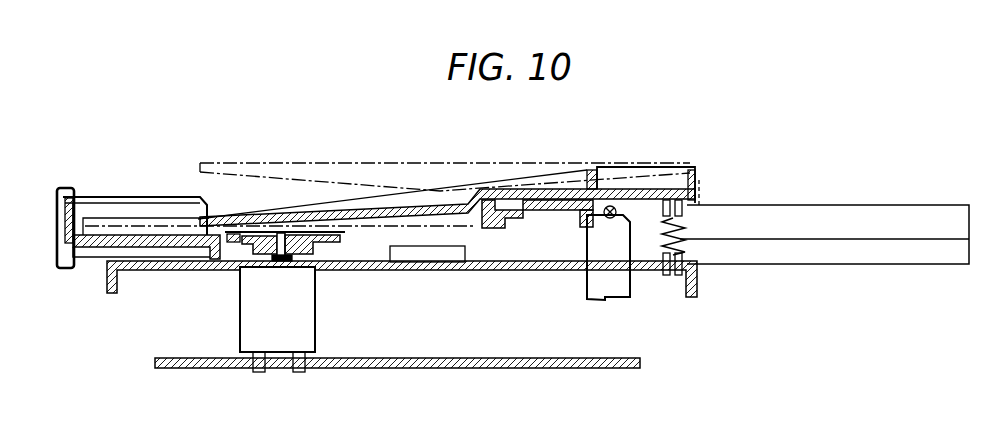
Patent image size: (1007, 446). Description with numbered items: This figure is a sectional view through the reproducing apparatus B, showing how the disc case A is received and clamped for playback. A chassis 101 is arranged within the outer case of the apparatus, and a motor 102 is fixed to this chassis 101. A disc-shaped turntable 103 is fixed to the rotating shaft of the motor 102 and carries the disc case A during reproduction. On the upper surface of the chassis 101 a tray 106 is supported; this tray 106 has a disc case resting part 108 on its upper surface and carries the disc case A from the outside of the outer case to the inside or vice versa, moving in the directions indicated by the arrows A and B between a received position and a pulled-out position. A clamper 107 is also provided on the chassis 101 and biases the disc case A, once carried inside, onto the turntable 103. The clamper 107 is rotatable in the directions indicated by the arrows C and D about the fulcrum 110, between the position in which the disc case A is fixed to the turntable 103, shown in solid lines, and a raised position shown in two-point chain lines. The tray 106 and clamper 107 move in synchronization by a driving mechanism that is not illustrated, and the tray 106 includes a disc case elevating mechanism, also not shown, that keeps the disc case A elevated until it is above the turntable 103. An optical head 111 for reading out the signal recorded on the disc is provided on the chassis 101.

The chassis 101 is at (148, 271).
The motor 102 is at (240, 331).
The turntable 103 is at (318, 243).
The tray 106 is at (100, 192).
The clamper 107 is at (533, 186).
The disc case resting part 108 is at (167, 232).
The fulcrum 110 is at (632, 202).
The optical head 111 is at (467, 253).
The disc case A is at (195, 203).
The reproducing apparatus B is at (705, 152).
The arrow C is at (272, 199).
The arrow D is at (256, 208).